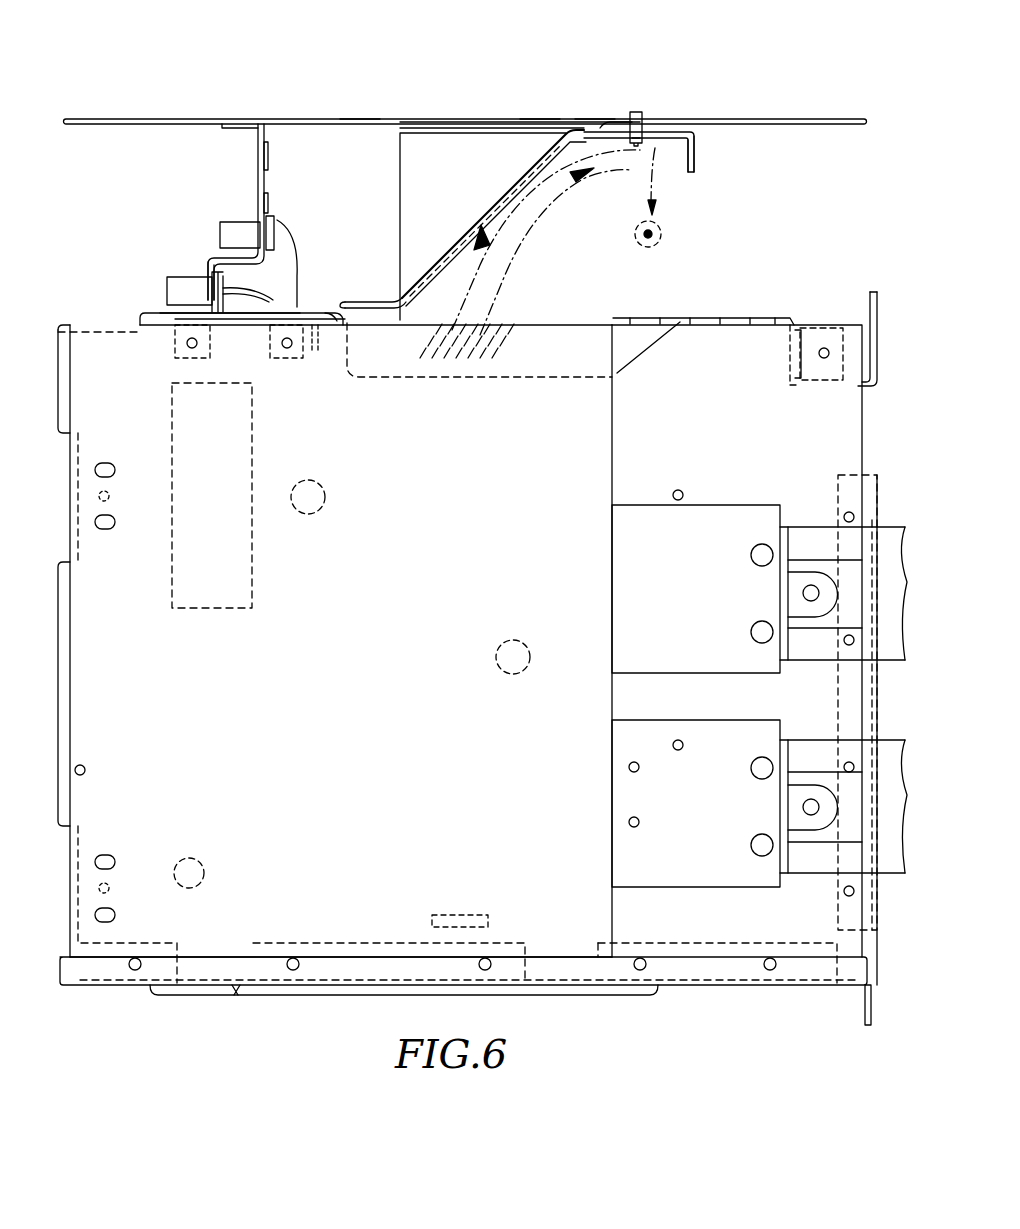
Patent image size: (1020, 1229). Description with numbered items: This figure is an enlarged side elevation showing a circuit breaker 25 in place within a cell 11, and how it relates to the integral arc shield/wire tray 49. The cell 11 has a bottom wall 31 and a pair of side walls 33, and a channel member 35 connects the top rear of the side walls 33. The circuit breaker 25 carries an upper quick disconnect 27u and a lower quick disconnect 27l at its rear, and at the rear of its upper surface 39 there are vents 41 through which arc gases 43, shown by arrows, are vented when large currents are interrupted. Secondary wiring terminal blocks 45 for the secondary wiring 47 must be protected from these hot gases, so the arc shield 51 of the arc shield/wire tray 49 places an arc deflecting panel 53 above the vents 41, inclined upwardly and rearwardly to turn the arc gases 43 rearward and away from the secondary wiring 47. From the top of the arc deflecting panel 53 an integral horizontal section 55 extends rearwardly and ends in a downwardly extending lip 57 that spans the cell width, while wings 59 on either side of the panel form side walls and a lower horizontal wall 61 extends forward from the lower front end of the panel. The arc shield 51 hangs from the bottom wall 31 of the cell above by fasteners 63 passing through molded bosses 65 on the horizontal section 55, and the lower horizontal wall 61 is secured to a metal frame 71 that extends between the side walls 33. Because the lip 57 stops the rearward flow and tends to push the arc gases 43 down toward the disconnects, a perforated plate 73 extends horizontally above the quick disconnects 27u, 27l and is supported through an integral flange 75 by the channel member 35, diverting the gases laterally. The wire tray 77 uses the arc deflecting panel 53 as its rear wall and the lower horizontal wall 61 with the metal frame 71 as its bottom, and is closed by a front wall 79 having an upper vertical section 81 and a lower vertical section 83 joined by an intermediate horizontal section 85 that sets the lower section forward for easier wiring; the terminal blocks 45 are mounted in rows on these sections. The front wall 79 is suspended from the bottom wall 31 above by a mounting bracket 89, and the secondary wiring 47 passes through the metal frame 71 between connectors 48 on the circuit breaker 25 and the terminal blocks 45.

The cell 11 is at (763, 102).
The circuit breaker 25 is at (96, 347).
The upper quick disconnect 27u is at (710, 524).
The lower quick disconnect 27l is at (702, 736).
The bottom wall 31 is at (430, 120).
The side walls 33 is at (704, 344).
The channel member 35 is at (878, 328).
The upper surface 39 is at (418, 320).
The vents 41 is at (504, 326).
The arc gases 43 is at (616, 162).
The secondary wiring terminal blocks 45 is at (245, 230).
The secondary wiring 47 is at (288, 282).
The connectors 48 is at (332, 320).
The arc shield/wire tray 49 is at (525, 108).
The arc shield 51 is at (580, 106).
The arc deflecting panel 53 is at (459, 250).
The horizontal section 55 is at (628, 126).
The lip 57 is at (696, 156).
The wings 59 is at (474, 128).
The lower horizontal wall 61 is at (357, 300).
The fasteners 63 is at (656, 150).
The molded bosses 65 is at (660, 122).
The metal frame 71 is at (163, 314).
The perforated plate 73 is at (766, 322).
The integral flange 75 is at (789, 357).
The wire tray 77 is at (364, 110).
The front wall 79 is at (288, 146).
The upper vertical section 81 is at (272, 156).
The lower vertical section 83 is at (230, 310).
The intermediate horizontal section 85 is at (206, 254).
The mounting bracket 89 is at (242, 128).